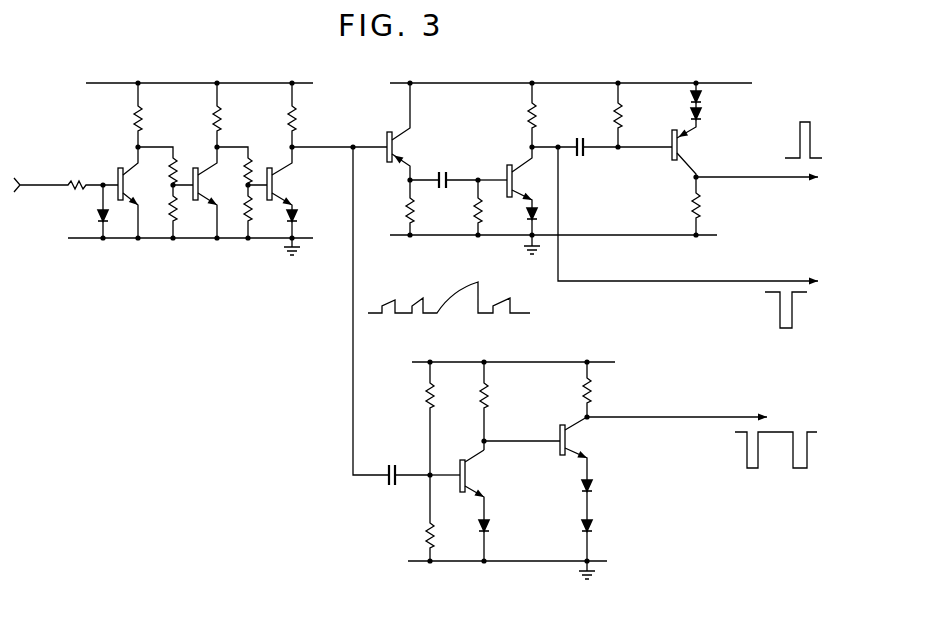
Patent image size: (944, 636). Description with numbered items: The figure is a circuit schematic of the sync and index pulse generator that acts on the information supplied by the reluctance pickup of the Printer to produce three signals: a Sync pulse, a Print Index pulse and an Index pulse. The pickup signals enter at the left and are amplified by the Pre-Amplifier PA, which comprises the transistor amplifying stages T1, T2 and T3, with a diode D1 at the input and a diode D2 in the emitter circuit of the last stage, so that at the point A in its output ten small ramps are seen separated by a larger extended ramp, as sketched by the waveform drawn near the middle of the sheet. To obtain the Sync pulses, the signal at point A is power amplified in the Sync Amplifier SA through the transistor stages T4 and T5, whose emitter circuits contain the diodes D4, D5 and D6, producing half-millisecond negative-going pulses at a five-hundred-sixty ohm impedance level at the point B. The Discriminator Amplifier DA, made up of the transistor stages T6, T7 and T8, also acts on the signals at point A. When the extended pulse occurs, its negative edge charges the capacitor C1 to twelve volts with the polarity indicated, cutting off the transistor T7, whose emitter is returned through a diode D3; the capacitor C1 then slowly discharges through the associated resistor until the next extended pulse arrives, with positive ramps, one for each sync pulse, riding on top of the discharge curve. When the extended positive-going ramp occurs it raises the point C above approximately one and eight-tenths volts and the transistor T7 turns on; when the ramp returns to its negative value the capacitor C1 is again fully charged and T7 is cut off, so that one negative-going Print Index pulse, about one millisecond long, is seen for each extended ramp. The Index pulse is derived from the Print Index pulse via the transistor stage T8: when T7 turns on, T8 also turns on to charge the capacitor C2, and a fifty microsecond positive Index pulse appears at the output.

The pre-amplifier PA is at (166, 158).
The discriminator amplifier DA is at (594, 206).
The sync amplifier SA is at (601, 459).
The transistor amplifying stage T1 is at (136, 192).
The transistor amplifying stage T2 is at (212, 192).
The transistor amplifying stage T3 is at (287, 178).
The transistor stage T4 is at (464, 485).
The transistor stage T5 is at (582, 448).
The transistor stage T6 is at (408, 131).
The transistor stage T7 is at (525, 177).
The transistor stage T8 is at (662, 154).
The diode D1 is at (91, 211).
The diode D2 is at (304, 228).
The diode D3 is at (520, 227).
The diode D4 is at (497, 540).
The diode D5 is at (600, 499).
The diode D6 is at (600, 545).
The capacitor C1 is at (444, 189).
The capacitor C2 is at (584, 145).
The point A is at (363, 160).
The point B is at (598, 405).
The point C is at (492, 167).